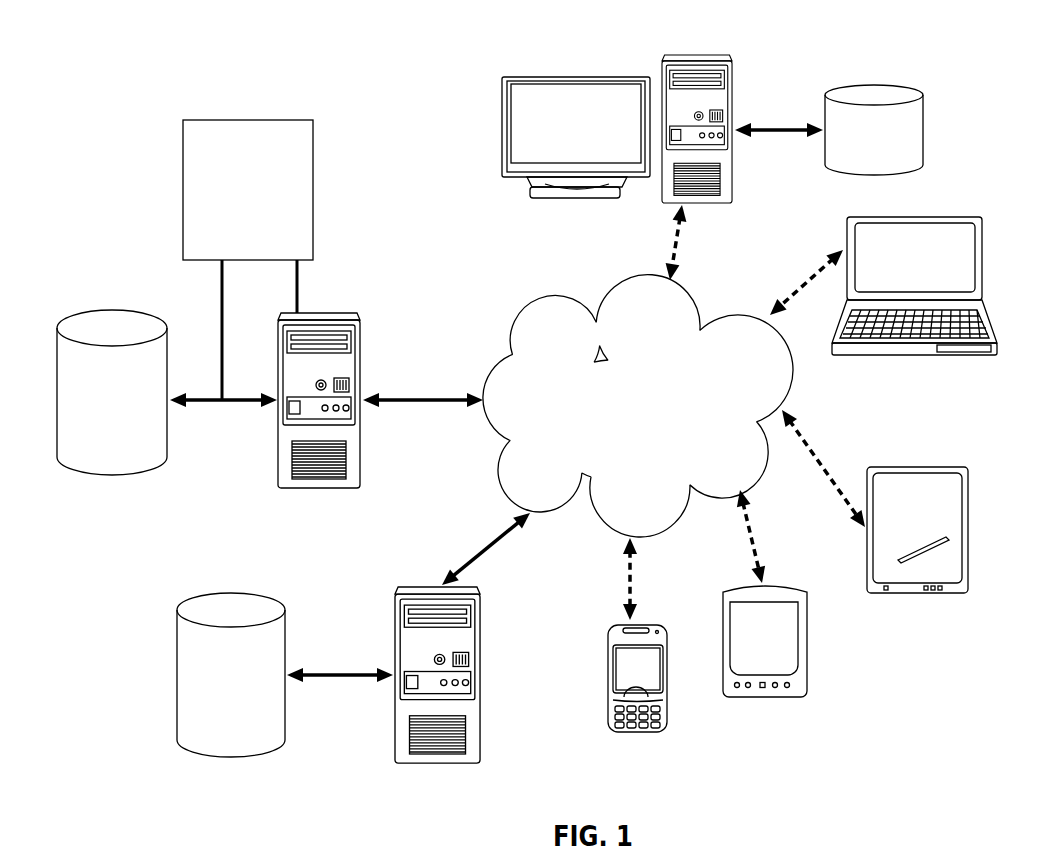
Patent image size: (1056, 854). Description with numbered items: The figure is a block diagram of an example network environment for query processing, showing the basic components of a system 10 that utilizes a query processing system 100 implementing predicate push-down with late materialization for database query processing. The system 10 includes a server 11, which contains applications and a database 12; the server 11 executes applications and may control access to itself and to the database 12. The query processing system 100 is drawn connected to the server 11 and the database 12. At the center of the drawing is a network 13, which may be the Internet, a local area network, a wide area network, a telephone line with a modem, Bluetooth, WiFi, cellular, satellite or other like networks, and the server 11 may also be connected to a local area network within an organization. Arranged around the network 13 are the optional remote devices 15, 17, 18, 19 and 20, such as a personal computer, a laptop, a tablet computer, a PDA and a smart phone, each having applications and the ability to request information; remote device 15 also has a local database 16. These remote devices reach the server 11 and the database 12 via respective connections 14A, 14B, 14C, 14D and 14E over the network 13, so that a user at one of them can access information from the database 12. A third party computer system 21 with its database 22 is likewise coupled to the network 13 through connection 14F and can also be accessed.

The system 10 is at (374, 84).
The query processing system 100 is at (230, 246).
The server 11 is at (315, 312).
The database 12 is at (120, 311).
The network 13 is at (538, 298).
The connection 14A is at (668, 250).
The connection 14B is at (800, 283).
The connection 14C is at (820, 470).
The connection 14D is at (752, 540).
The connection 14E is at (628, 580).
The connection 14F is at (480, 548).
The remote device 15 is at (690, 55).
The local database 16 is at (925, 132).
The remote device 17 is at (985, 262).
The remote device 18 is at (950, 467).
The remote device 19 is at (809, 660).
The remote device 20 is at (608, 688).
The third party computer system 21 is at (482, 665).
The database 22 is at (230, 593).